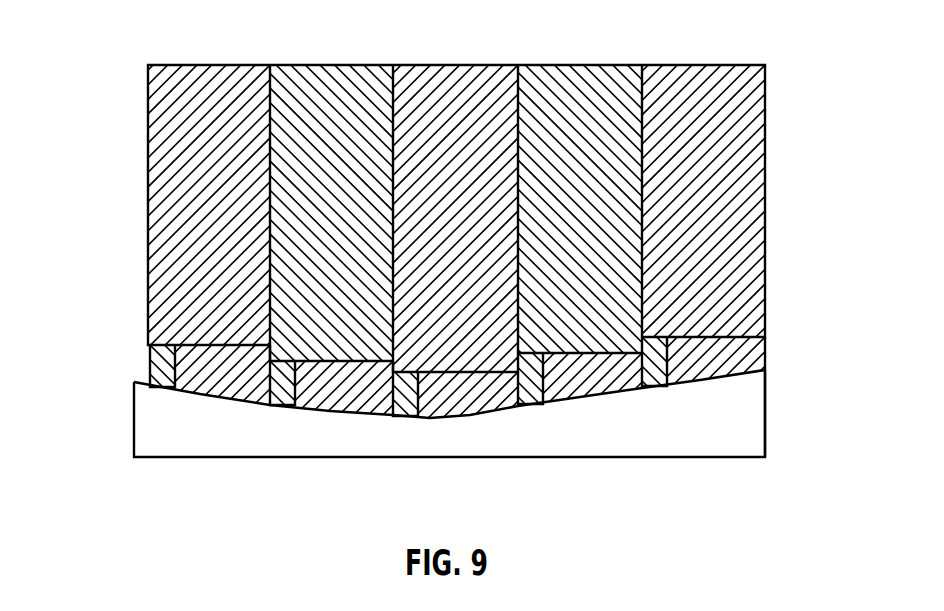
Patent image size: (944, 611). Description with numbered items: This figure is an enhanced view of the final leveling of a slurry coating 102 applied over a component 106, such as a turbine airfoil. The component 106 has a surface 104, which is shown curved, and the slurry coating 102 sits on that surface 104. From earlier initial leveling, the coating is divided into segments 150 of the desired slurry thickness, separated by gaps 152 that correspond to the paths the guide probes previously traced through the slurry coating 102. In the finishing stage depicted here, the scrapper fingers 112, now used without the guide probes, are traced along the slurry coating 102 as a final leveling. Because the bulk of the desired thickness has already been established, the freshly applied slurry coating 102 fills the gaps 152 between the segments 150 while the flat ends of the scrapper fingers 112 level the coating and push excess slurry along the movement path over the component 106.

The scrapper finger 112 is at (326, 74).
The slurry coating 102 is at (136, 350).
The segment 150 is at (757, 357).
The gap 152 is at (283, 402).
The surface 104 is at (583, 395).
The component 106 is at (758, 430).